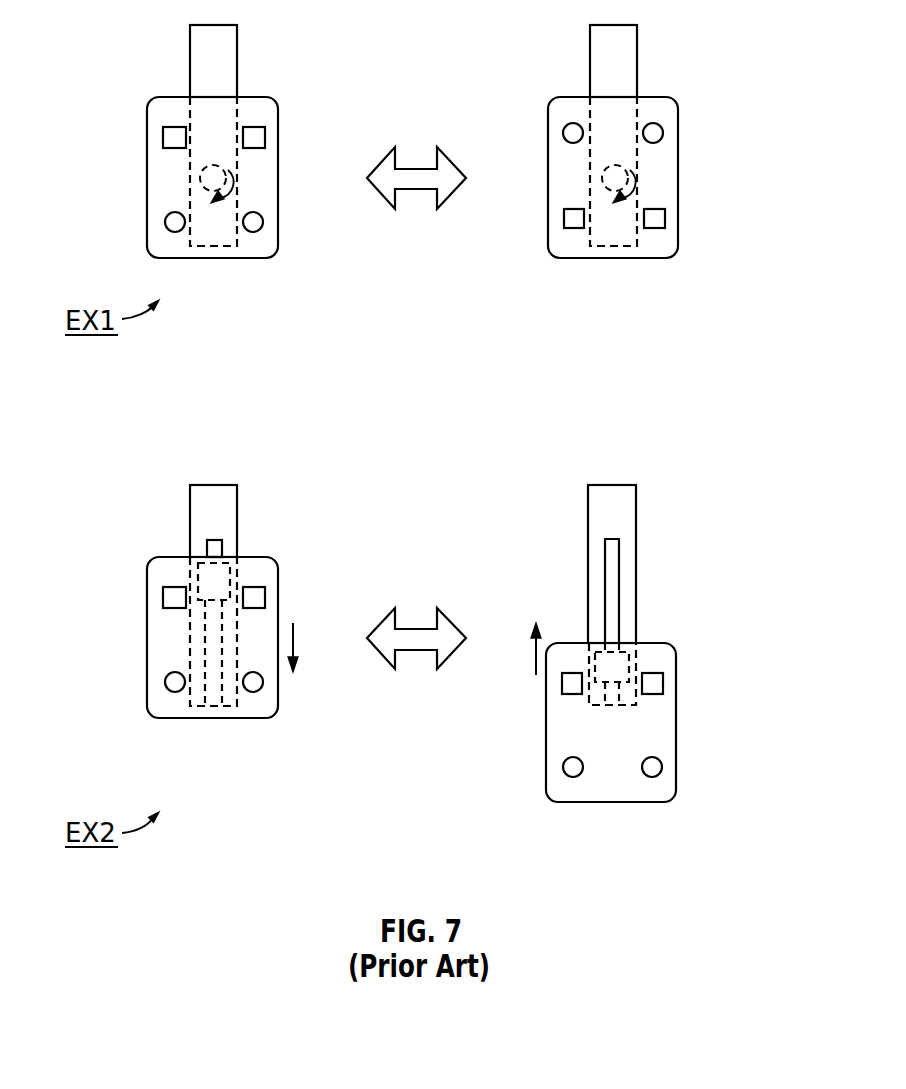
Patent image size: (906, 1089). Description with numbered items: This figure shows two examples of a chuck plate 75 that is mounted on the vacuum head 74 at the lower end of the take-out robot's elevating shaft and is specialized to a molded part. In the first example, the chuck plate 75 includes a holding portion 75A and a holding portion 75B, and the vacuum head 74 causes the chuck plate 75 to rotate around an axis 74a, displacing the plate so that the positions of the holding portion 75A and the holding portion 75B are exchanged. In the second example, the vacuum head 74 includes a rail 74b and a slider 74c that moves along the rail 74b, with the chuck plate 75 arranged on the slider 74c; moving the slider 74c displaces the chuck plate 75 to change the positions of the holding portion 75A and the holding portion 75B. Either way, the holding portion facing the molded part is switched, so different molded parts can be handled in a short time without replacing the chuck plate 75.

The vacuum head 74 is at (238, 52).
The chuck plate 75 is at (276, 100).
The holding portion 75A is at (163, 138).
The holding portion 75B is at (167, 223).
The axis 74a is at (200, 178).
The rail 74b is at (207, 547).
The slider 74c is at (193, 588).